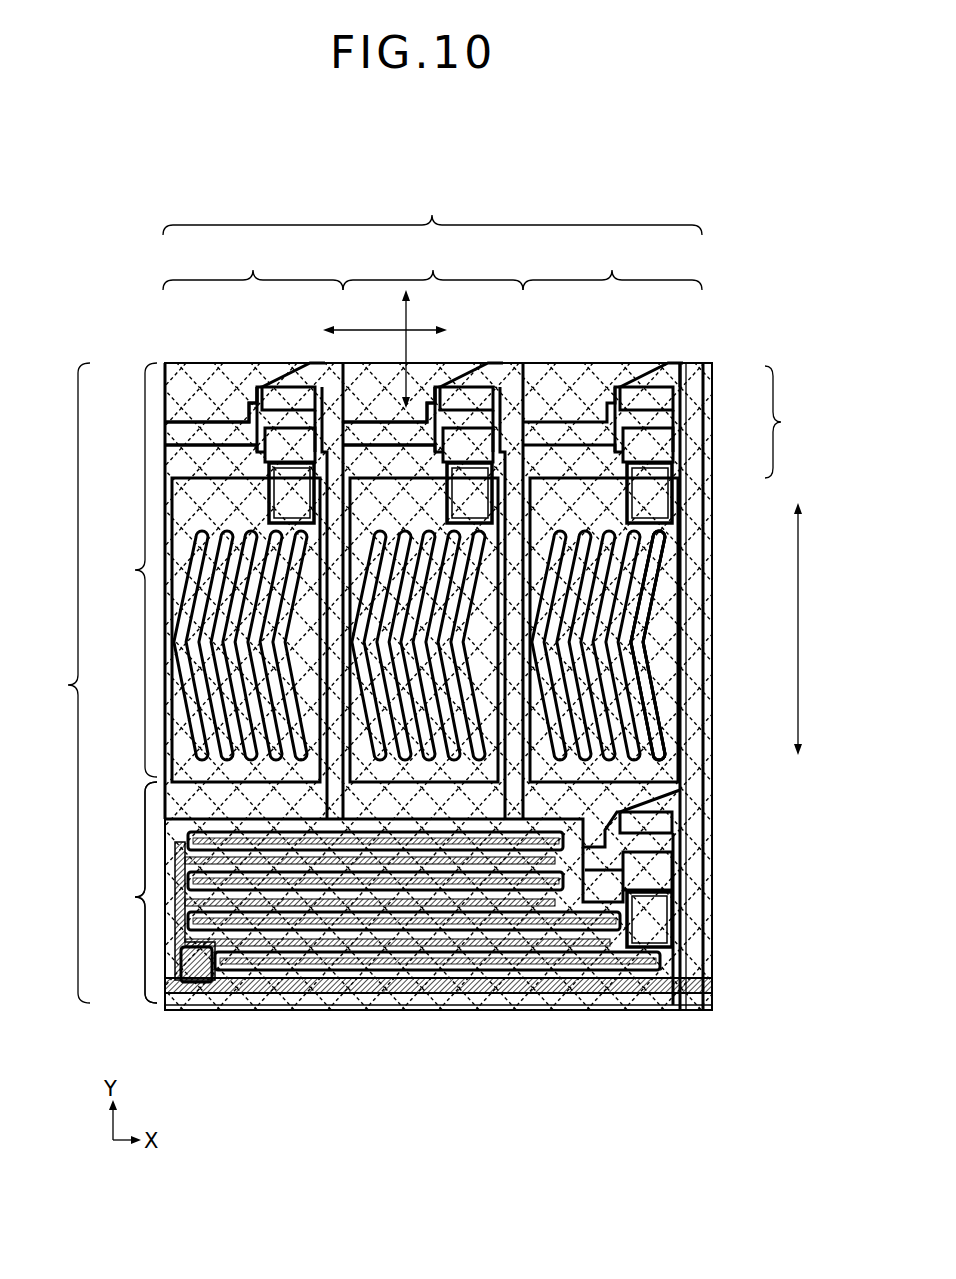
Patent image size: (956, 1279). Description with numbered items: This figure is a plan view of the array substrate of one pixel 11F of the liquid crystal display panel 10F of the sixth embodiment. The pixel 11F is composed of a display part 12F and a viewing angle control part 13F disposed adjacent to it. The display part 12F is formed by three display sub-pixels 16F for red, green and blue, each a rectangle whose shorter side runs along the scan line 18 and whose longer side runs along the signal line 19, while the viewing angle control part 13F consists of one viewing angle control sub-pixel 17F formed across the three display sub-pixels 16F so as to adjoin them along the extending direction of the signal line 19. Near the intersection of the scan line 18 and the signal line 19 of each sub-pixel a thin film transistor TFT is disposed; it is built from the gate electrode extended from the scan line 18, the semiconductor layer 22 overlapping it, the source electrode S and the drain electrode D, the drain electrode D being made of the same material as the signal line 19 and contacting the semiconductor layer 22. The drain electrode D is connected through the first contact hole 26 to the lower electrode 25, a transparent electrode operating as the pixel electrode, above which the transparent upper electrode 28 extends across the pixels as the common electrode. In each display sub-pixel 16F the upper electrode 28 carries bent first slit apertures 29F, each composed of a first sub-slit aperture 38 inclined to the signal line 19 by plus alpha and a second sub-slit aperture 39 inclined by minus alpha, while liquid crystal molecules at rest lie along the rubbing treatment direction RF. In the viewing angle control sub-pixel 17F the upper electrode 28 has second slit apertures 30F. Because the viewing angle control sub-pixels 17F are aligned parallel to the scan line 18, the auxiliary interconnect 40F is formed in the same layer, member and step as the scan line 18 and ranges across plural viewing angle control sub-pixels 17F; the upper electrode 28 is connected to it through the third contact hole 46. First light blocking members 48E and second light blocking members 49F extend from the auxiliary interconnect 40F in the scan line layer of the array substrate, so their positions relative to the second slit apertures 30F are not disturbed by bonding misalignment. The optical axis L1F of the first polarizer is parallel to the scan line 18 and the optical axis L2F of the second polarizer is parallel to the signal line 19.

The liquid crystal display panel 10F is at (131, 154).
The pixel 11F is at (363, 595).
The display part 12F is at (122, 570).
The viewing angle control part 13F is at (122, 892).
The display sub-pixel 16F is at (394, 421).
The viewing angle control sub-pixel 17F is at (122, 892).
The scan line 18 is at (200, 435).
The signal line 19 is at (695, 545).
The semiconductor layer 22 is at (653, 420).
The lower electrode 25 is at (663, 617).
The first contact hole 26 is at (658, 475).
The upper electrode 28 is at (673, 740).
The first slit aperture 29F is at (647, 643).
The second slit aperture 30F is at (490, 1003).
The first sub-slit aperture 38 is at (655, 580).
The second sub-slit aperture 39 is at (653, 703).
The auxiliary interconnect 40F is at (278, 1005).
The third contact hole 46 is at (200, 1005).
The first light blocking member 48E is at (352, 1000).
The second light blocking member 49F is at (428, 1000).
The source electrode S is at (663, 392).
The drain electrode D is at (657, 437).
The thin film transistor TFT is at (796, 422).
The rubbing treatment direction RF is at (814, 629).
The optical axis of first polarizer L1F is at (385, 317).
The optical axis of second polarizer L2F is at (394, 349).